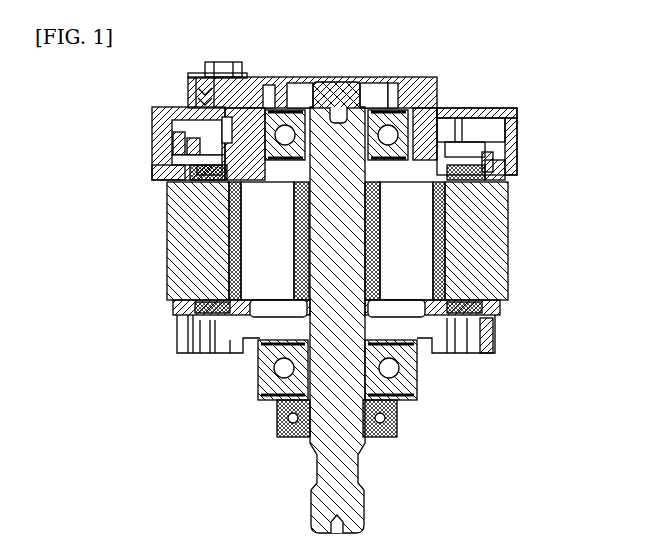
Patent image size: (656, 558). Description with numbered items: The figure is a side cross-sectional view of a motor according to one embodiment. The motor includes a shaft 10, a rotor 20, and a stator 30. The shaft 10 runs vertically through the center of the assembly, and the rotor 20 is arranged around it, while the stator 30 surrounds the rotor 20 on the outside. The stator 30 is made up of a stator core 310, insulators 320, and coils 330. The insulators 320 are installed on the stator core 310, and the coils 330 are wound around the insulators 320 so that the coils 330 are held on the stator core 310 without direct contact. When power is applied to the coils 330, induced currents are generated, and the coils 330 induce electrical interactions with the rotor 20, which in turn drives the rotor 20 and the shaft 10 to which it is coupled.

The shaft 10 is at (372, 473).
The rotor 20 is at (403, 287).
The stator 30 is at (392, 227).
The stator core 310 is at (485, 232).
The insulators 320 is at (504, 182).
The coils 330 is at (505, 165).